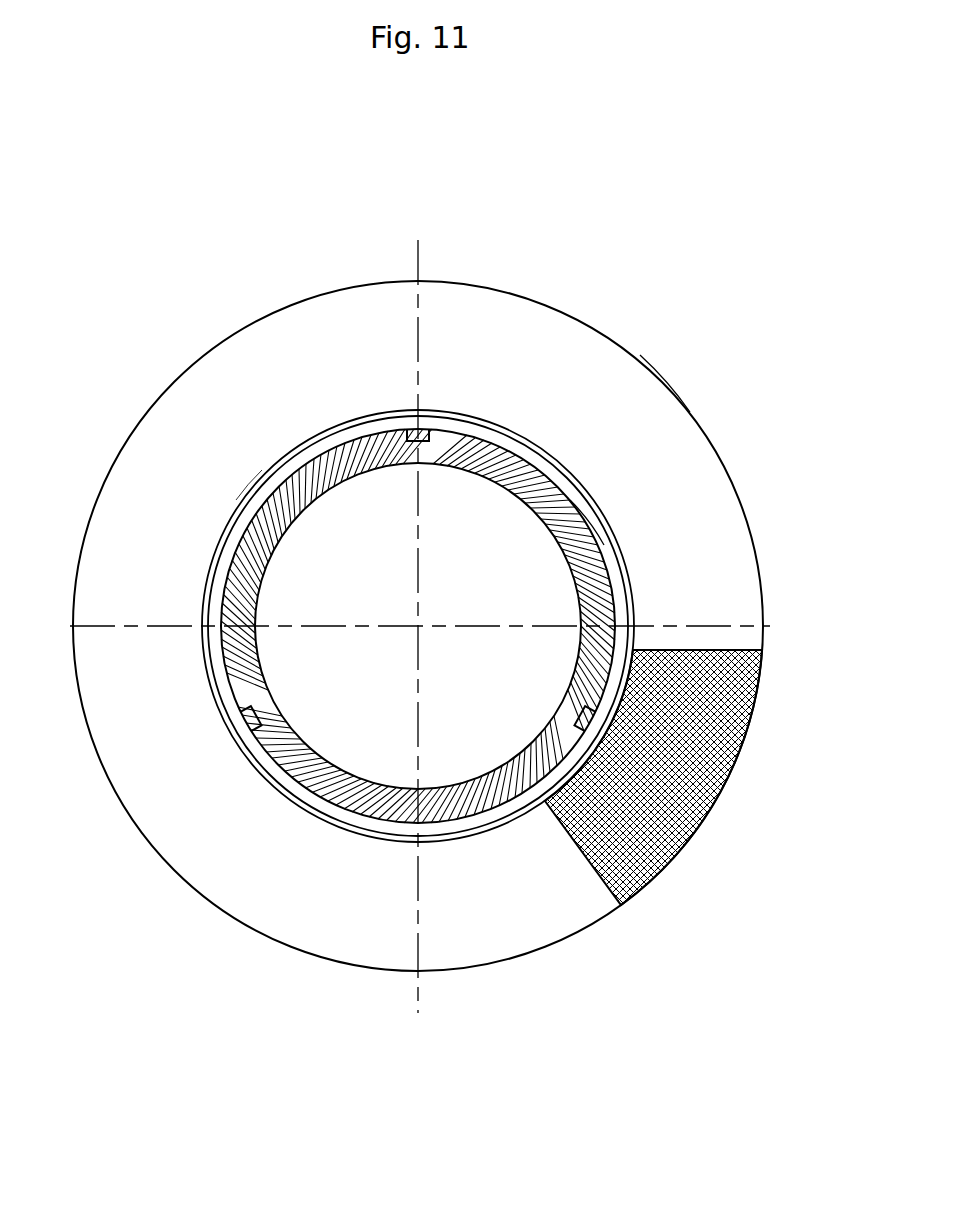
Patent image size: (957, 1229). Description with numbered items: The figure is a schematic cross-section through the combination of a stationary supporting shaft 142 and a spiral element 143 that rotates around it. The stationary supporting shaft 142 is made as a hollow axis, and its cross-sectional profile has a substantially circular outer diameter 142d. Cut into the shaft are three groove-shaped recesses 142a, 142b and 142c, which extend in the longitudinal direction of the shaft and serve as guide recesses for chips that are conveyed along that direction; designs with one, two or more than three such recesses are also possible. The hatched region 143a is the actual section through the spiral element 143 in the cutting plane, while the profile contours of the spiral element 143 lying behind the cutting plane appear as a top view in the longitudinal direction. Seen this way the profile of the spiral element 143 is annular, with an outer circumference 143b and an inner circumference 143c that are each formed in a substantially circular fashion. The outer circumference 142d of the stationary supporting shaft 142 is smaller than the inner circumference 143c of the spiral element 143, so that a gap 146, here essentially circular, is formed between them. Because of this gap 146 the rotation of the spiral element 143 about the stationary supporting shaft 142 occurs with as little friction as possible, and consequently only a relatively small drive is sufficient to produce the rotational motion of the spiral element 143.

The stationary supporting shaft 142 is at (517, 442).
The groove-shaped recess 142a is at (575, 703).
The groove-shaped recess 142b is at (400, 460).
The groove-shaped recess 142c is at (265, 698).
The outer diameter of the stationary supporting shaft 142d is at (590, 522).
The spiral element 143 is at (563, 285).
The section through the spiral element 143a is at (710, 817).
The outer circumference of the spiral element 143b is at (667, 373).
The inner circumference of the spiral element 143c is at (293, 447).
The gap 146 is at (250, 503).